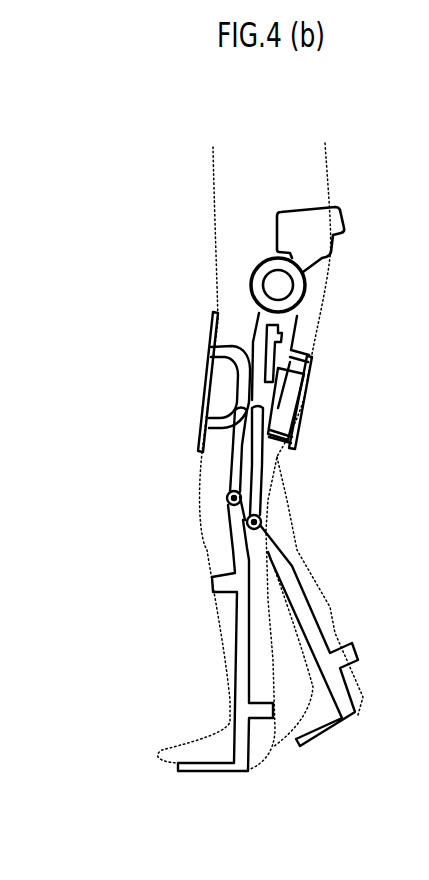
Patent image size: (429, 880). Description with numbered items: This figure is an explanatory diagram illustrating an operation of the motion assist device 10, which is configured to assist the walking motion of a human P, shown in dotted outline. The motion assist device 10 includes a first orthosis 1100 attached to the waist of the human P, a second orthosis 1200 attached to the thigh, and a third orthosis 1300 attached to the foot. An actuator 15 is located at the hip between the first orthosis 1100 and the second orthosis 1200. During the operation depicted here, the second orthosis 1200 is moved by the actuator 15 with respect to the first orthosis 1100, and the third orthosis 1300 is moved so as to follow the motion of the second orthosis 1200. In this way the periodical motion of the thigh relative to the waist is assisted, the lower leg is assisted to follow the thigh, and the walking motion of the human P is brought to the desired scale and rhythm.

The motion assist device 10 is at (146, 178).
The actuator 15 is at (313, 298).
The first orthosis 1100 is at (342, 200).
The second orthosis 1200 is at (178, 376).
The third orthosis 1300 is at (192, 578).
The human P is at (198, 151).